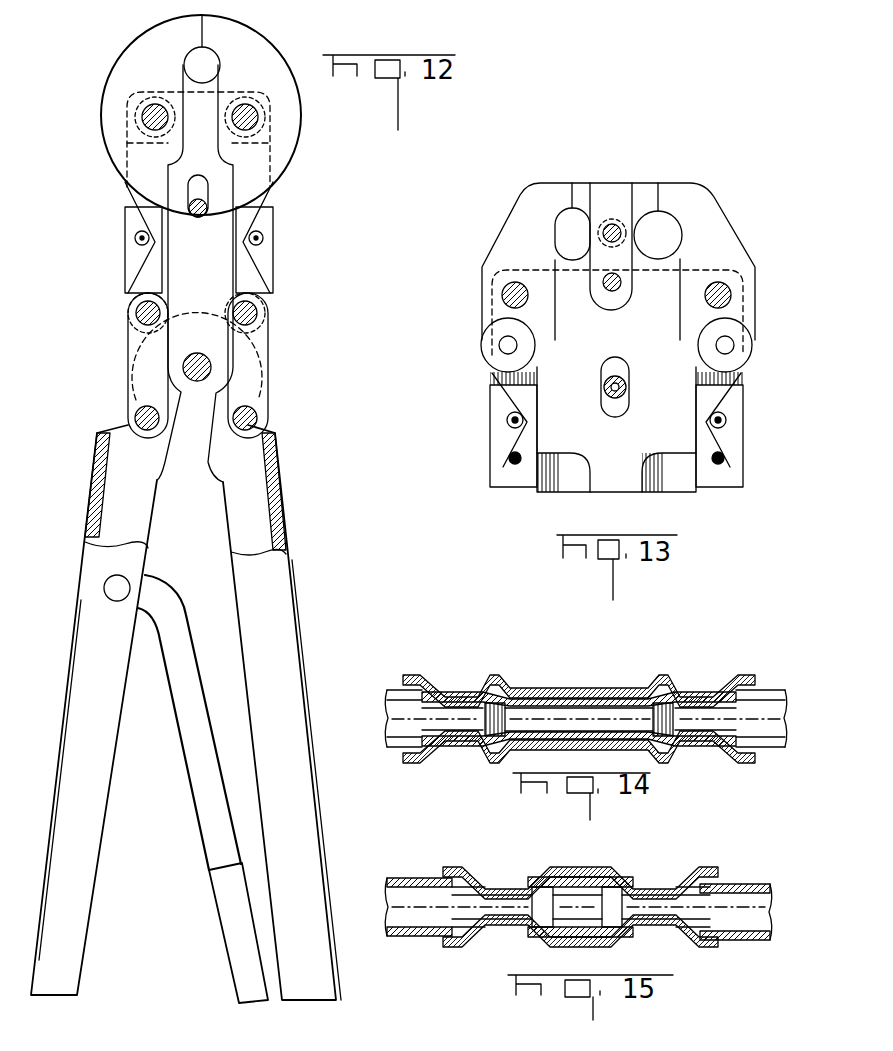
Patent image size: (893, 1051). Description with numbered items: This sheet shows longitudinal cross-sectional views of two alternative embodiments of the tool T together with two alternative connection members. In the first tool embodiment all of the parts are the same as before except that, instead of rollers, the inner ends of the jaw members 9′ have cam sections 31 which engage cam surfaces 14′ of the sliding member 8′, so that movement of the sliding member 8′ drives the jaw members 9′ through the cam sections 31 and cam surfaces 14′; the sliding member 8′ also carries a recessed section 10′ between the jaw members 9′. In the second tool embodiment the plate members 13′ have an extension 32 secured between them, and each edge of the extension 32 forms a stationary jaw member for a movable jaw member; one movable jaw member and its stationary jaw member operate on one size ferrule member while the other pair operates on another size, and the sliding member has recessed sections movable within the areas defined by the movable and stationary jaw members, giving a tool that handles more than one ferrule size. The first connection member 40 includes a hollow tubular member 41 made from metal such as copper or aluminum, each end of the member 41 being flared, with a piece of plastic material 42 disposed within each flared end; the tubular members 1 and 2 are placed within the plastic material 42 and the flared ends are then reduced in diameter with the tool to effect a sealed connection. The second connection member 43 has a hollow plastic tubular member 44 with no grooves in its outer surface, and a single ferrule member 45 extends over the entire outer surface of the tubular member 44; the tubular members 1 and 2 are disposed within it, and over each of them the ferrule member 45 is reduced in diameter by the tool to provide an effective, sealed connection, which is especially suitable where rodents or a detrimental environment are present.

In FIG. 12, the jaw members 9′ is at (118, 78).
In FIG. 12, the die opening 10′ is at (205, 72).
In FIG. 12, the sliding member 8′ is at (212, 257).
In FIG. 12, the cam surfaces 14′ is at (172, 200).
In FIG. 12, the cam sections 31 is at (148, 180).
In FIG. 12, the tool T is at (338, 212).
In FIG. 13, the tool T is at (708, 133).
In FIG. 13, the extension 32 is at (617, 183).
In FIG. 13, the plate members 13′ is at (497, 442).
In FIG. 14, the connection member 40 is at (624, 676).
In FIG. 14, the hollow tubular member 41 is at (573, 688).
In FIG. 14, the piece of plastic material 42 is at (418, 680).
In FIG. 14, the tubular member 1 is at (390, 686).
In FIG. 15, the tubular member 1 is at (400, 880).
In FIG. 14, the tubular member 2 is at (781, 748).
In FIG. 15, the tubular member 2 is at (758, 946).
In FIG. 15, the connection member 43 is at (660, 870).
In FIG. 15, the hollow plastic tubular member 44 is at (572, 948).
In FIG. 15, the ferrule member 45 is at (555, 870).